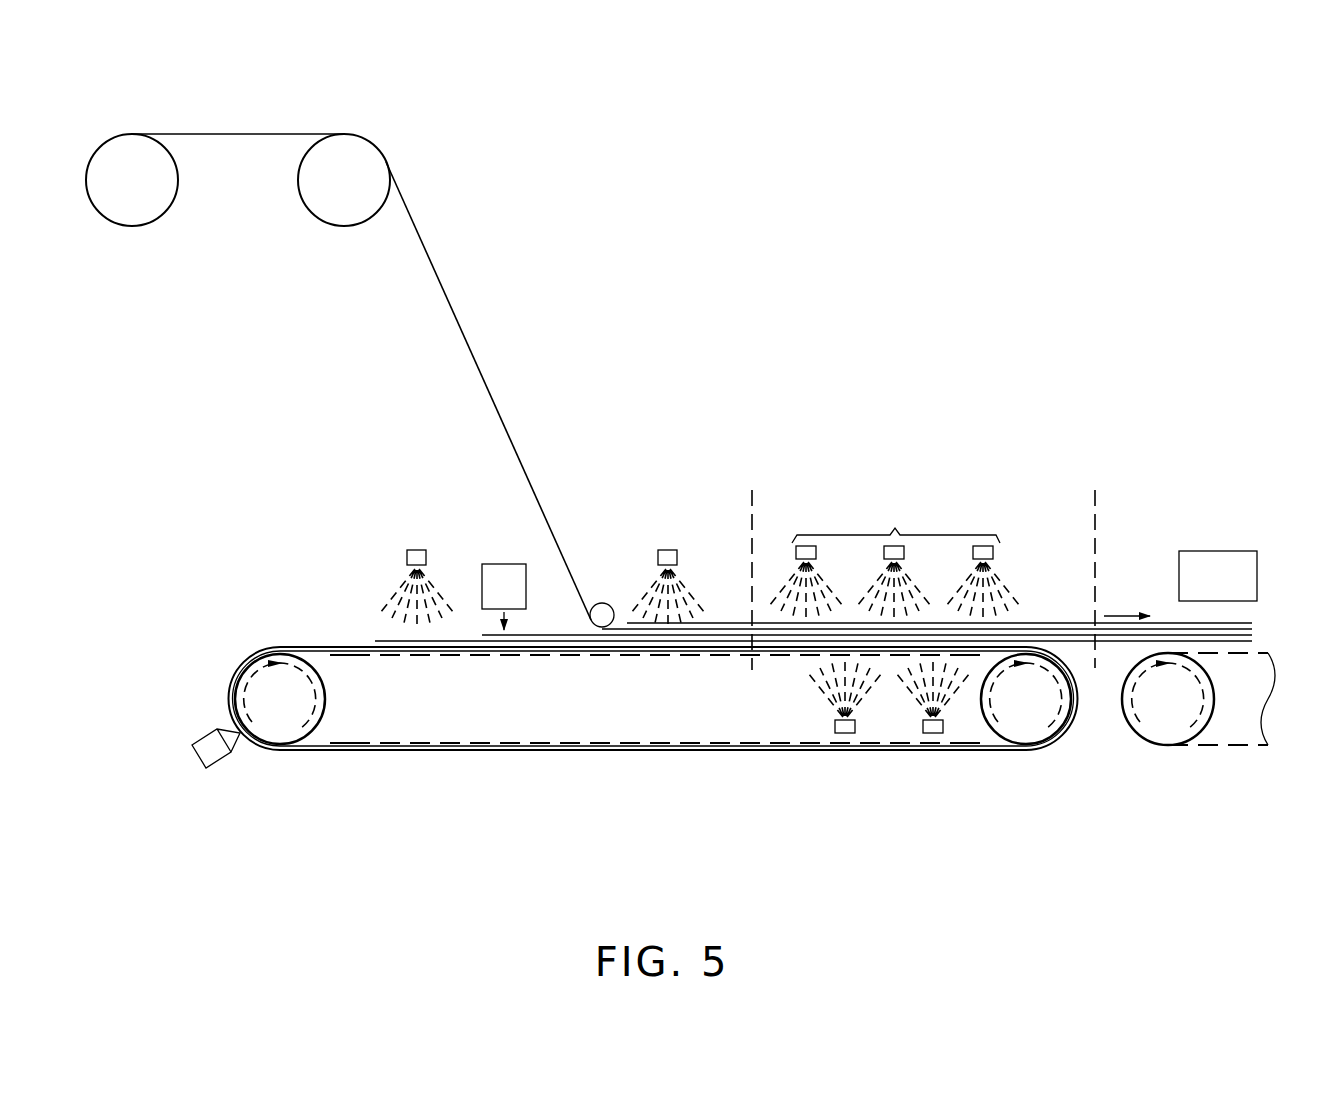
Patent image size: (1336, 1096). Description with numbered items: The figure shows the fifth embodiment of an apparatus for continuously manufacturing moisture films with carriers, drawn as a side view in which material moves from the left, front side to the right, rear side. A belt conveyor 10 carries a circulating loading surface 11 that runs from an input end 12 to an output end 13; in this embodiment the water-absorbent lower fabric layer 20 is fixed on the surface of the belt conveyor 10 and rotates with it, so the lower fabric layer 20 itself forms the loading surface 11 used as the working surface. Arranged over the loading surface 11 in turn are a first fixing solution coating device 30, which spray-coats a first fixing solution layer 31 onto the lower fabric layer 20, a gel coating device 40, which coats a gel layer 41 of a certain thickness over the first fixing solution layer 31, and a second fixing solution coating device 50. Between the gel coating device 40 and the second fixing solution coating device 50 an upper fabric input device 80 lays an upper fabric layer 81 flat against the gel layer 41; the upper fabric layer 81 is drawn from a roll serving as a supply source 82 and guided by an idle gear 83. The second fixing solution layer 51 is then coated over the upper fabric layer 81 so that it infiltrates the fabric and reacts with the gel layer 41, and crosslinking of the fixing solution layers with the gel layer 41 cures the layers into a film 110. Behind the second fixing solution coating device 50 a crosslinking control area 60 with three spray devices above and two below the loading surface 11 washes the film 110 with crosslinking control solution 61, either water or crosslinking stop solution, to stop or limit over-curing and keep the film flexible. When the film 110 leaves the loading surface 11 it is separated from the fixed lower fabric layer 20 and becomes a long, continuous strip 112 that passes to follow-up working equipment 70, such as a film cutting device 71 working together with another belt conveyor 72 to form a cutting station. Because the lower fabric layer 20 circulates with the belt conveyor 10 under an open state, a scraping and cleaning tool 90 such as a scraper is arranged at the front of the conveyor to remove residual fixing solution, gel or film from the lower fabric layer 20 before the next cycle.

The belt conveyor 10 is at (649, 745).
The loading surface 11 is at (468, 658).
The input end 12 is at (345, 658).
The output end 13 is at (976, 658).
The lower fabric layer 20 is at (313, 646).
The first fixing solution coating device 30 is at (414, 549).
The first fixing solution layer 31 is at (403, 640).
The gel coating device 40 is at (503, 566).
The gel layer 41 is at (522, 634).
The second fixing solution coating device 50 is at (667, 549).
The second fixing solution layer 51 is at (696, 623).
The crosslinking control area 60 is at (901, 672).
The crosslinking control solution 61 is at (1004, 577).
The follow-up working equipment 70 is at (1228, 622).
The film cutting device 71 is at (1243, 583).
The belt conveyor 72 is at (1253, 702).
The upper fabric input device 80 is at (669, 381).
The upper fabric layer 81 is at (488, 388).
The supply source 82 is at (131, 218).
The idle gear 83 is at (343, 218).
The scraping and cleaning tool 90 is at (213, 766).
The film 110 is at (755, 511).
The long, continuous strip 112 is at (1098, 511).